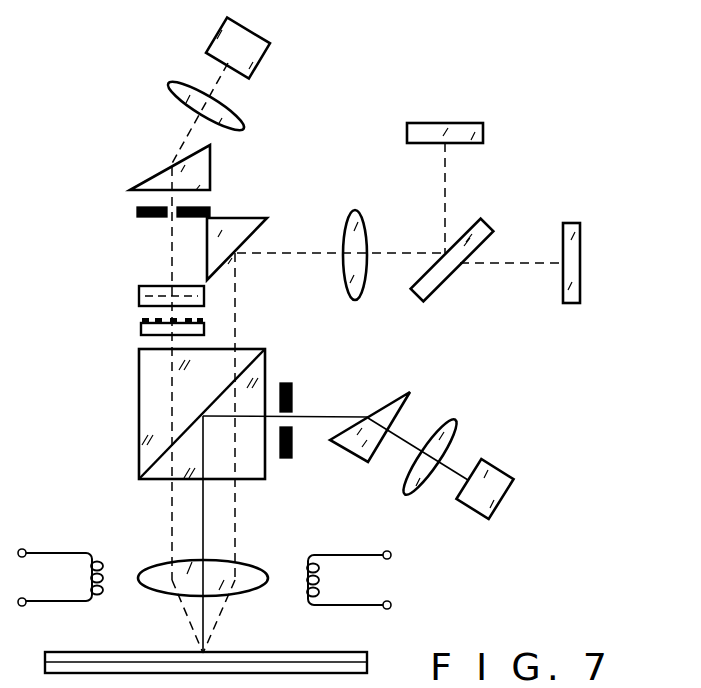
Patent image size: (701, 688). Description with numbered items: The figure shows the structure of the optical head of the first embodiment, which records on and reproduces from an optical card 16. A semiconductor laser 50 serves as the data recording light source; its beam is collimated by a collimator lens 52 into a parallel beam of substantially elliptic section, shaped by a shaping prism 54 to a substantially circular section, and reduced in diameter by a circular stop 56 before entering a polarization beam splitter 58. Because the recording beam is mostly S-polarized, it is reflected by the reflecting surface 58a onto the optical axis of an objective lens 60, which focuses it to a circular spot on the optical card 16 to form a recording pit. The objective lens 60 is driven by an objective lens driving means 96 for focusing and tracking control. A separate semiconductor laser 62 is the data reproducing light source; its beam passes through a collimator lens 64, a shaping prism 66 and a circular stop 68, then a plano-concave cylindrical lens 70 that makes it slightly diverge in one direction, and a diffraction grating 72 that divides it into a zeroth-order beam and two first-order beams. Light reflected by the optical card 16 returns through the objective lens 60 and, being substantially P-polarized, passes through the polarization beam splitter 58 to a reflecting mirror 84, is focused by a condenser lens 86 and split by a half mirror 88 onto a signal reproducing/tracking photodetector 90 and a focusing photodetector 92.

The optical card 16 is at (70, 652).
The semiconductor laser 50 is at (512, 483).
The collimator lens 52 is at (453, 428).
The shaping prism 54 is at (410, 398).
The circular stop 56 is at (292, 390).
The polarization beam splitter 58 is at (139, 402).
The reflecting surface 58a is at (160, 457).
The objective lens 60 is at (140, 580).
The semiconductor laser 62 is at (207, 52).
The collimator lens 64 is at (168, 87).
The shaping prism 66 is at (150, 187).
The circular stop 68 is at (137, 212).
The plano-concave cylindrical lens 70 is at (139, 297).
The diffraction grating 72 is at (141, 327).
The reflecting mirror 84 is at (260, 217).
The condenser lens 86 is at (360, 212).
The half mirror 88 is at (488, 219).
The signal reproducing/tracking photodetector 90 is at (582, 267).
The focusing photodetector 92 is at (455, 122).
The objective lens driving means 96 is at (70, 553).